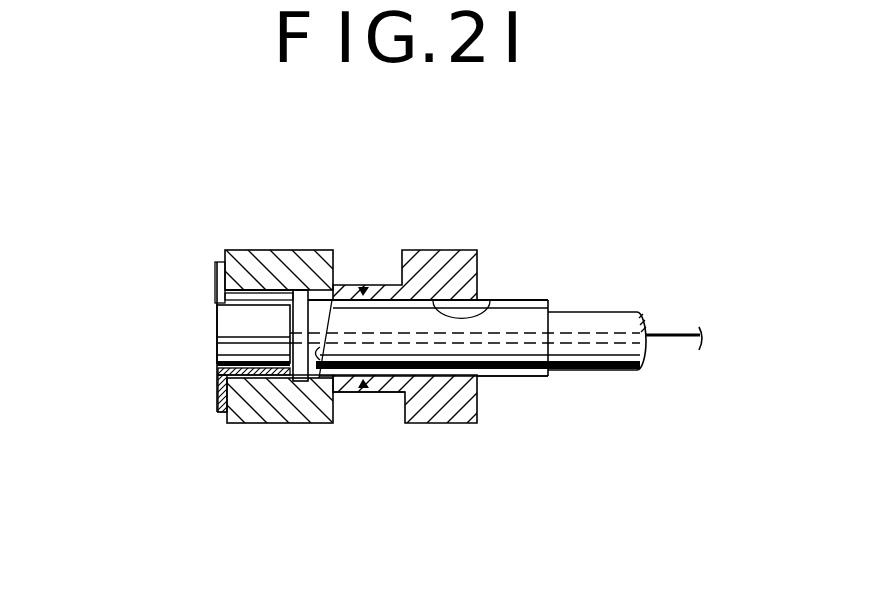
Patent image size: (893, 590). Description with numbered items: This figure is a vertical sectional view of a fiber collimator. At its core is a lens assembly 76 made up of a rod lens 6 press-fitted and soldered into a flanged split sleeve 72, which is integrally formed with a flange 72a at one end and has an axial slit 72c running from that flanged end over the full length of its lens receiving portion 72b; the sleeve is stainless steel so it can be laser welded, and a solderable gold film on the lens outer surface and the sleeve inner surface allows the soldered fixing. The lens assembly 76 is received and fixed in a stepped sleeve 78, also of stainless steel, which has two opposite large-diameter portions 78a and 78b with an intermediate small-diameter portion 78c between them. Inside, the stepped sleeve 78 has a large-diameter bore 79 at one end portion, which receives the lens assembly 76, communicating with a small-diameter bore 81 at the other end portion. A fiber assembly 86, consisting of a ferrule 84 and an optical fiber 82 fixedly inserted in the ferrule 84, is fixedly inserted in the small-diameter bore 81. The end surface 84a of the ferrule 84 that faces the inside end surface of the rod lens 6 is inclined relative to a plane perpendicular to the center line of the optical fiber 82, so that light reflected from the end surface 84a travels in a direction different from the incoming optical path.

The rod lens 6 is at (217, 352).
The flanged split sleeve 72 is at (222, 378).
The flange 72a is at (221, 413).
The lens receiving portion 72b is at (262, 381).
The axial slit 72c is at (213, 296).
The lens assembly 76 is at (196, 320).
The stepped sleeve 78 is at (355, 292).
The large-diameter portion 78a is at (272, 250).
The large-diameter portion 78b is at (448, 250).
The intermediate small-diameter portion 78c is at (352, 284).
The large-diameter bore 79 is at (257, 294).
The small-diameter bore 81 is at (499, 301).
The optical fiber 82 is at (673, 333).
The ferrule 84 is at (530, 378).
The end surface 84a is at (340, 394).
The fiber assembly 86 is at (541, 294).